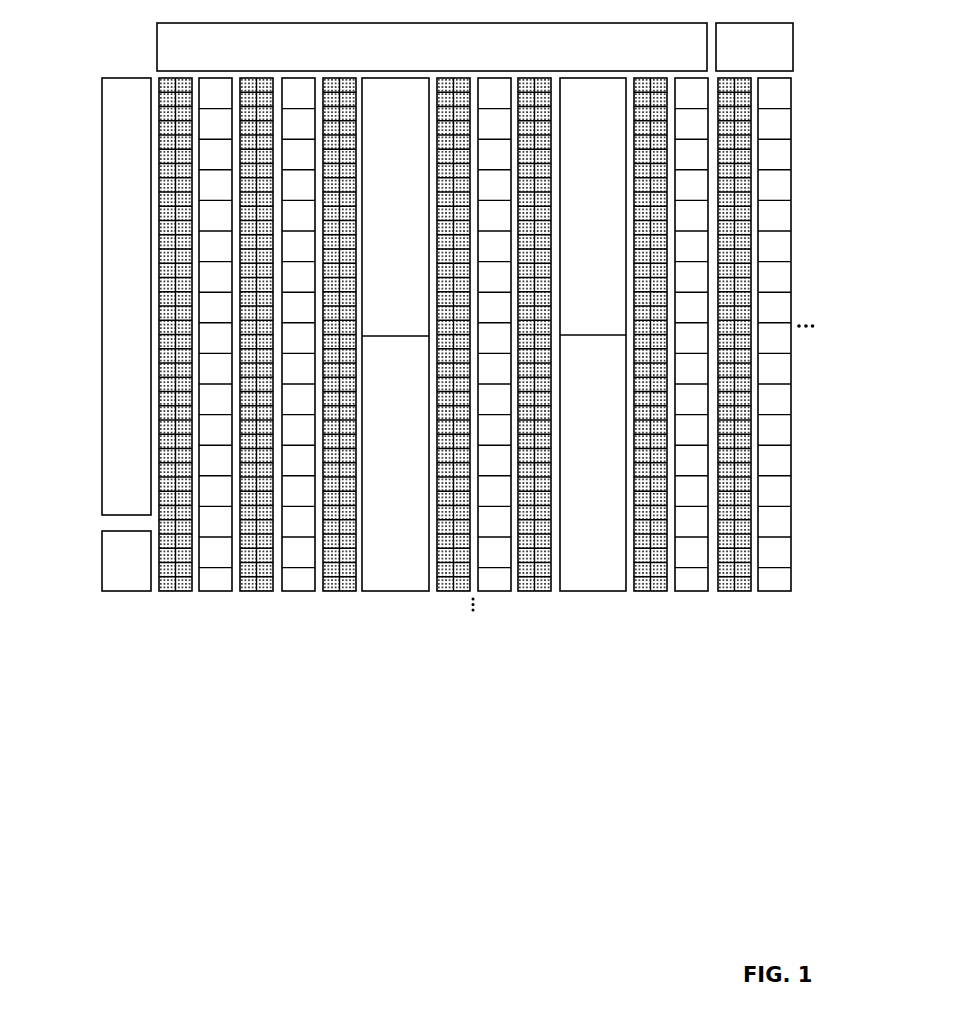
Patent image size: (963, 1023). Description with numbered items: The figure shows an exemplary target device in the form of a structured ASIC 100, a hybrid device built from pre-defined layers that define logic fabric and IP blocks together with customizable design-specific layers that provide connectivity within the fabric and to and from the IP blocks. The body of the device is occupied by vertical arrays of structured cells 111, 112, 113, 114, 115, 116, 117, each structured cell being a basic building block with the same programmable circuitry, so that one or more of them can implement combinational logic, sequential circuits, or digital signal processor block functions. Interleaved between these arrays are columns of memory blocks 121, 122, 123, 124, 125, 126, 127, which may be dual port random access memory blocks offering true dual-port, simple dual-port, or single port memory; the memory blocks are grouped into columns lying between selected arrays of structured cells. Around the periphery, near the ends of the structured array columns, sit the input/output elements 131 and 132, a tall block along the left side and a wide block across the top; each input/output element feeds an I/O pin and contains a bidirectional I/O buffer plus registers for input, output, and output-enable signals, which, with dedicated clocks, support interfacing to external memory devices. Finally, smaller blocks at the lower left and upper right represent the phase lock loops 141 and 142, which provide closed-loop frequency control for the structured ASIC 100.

The structured ASIC 100 is at (60, 186).
The input/output element 132 is at (588, 32).
The phase lock loop 142 is at (789, 59).
The input/output element 131 is at (108, 470).
The phase lock loop 141 is at (136, 586).
The array of structured cells 111 is at (178, 586).
The array of structured cells 112 is at (262, 585).
The array of structured cells 113 is at (347, 580).
The array of structured cells 114 is at (461, 580).
The array of structured cells 115 is at (545, 581).
The array of structured cells 116 is at (663, 582).
The array of structured cells 117 is at (728, 583).
The column of memory blocks 121 is at (231, 583).
The column of memory blocks 122 is at (304, 578).
The column of memory blocks 123 is at (379, 580).
The column of memory blocks 124 is at (500, 582).
The column of memory blocks 125 is at (582, 592).
The column of memory blocks 126 is at (683, 582).
The column of memory blocks 127 is at (785, 581).